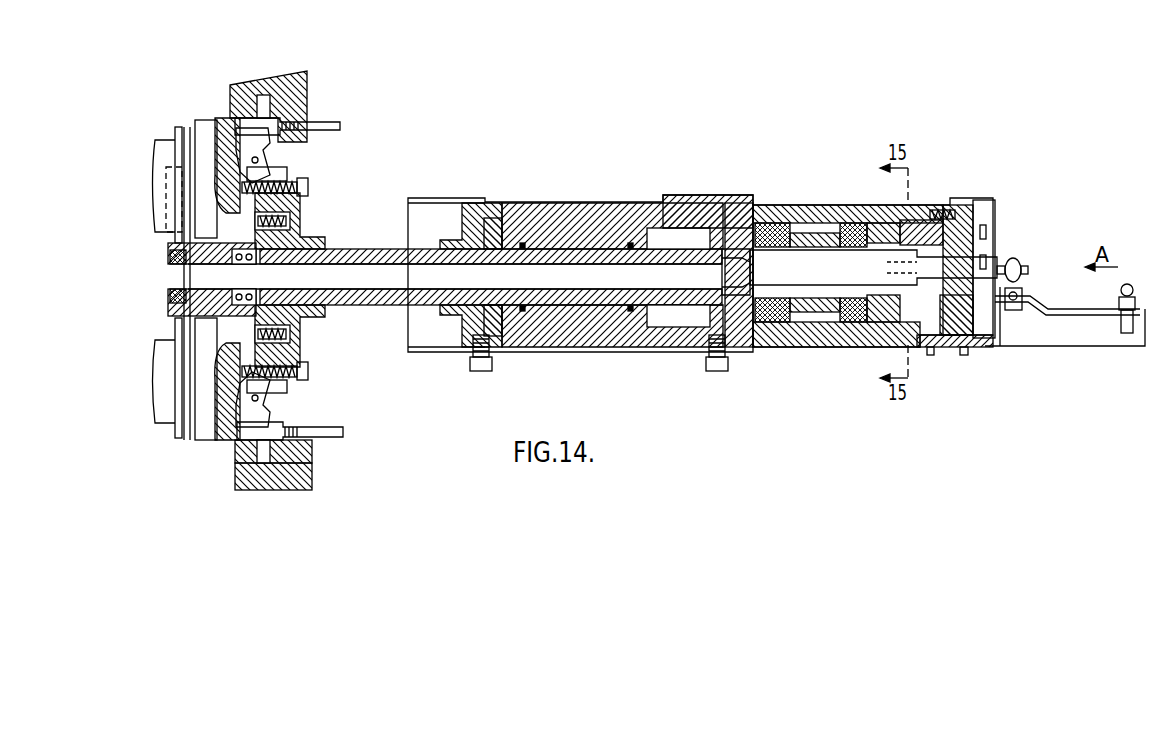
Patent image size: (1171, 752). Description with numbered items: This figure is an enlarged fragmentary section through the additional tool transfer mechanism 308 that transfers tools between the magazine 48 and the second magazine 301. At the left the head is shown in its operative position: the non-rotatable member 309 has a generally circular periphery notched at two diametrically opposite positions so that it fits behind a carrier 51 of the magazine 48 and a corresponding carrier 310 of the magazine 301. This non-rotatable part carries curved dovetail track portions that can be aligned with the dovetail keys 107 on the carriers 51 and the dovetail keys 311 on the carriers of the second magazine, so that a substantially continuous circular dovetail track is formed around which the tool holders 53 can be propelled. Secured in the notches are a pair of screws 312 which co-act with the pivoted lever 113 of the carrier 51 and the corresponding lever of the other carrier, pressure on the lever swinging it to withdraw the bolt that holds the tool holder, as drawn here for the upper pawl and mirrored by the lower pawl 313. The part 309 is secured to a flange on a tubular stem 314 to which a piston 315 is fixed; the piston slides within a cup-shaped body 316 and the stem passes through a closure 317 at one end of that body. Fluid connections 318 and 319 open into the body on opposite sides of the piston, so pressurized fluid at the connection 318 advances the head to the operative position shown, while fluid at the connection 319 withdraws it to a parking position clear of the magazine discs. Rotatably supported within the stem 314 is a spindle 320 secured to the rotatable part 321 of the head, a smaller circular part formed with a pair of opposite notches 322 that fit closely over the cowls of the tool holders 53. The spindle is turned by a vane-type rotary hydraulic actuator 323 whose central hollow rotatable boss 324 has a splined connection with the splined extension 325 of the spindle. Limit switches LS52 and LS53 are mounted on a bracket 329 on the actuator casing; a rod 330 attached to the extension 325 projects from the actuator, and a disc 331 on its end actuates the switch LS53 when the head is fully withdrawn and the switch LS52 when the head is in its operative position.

The magazine 48 is at (300, 72).
The carrier 51 is at (298, 108).
The tool holder 53 is at (187, 140).
The dovetail key 107 is at (230, 192).
The pivoted lever 113 is at (247, 158).
The second magazine 301 is at (316, 476).
The tool transfer mechanism 308 is at (320, 228).
The non-rotatable member 309 is at (280, 355).
The carrier 310 is at (312, 452).
The dovetail key 311 is at (222, 388).
The screw 312 is at (285, 183).
The lower pawl 313 is at (252, 405).
The tubular stem 314 is at (416, 252).
The piston 315 is at (580, 225).
The cup-shaped body 316 is at (668, 208).
The closure 317 is at (482, 222).
The fluid connection 318 is at (718, 366).
The fluid connection 319 is at (484, 360).
The spindle 320 is at (351, 262).
The rotatable part 321 is at (195, 250).
The notch 322 is at (172, 227).
The vane-type rotary hydraulic actuator 323 is at (815, 200).
The hollow rotatable boss 324 is at (888, 283).
The splined extension 325 is at (808, 272).
The bracket 329 is at (1072, 312).
The rod 330 is at (950, 268).
The disc 331 is at (1012, 258).
The limit switch LS52 is at (1017, 310).
The limit switch LS53 is at (1128, 333).